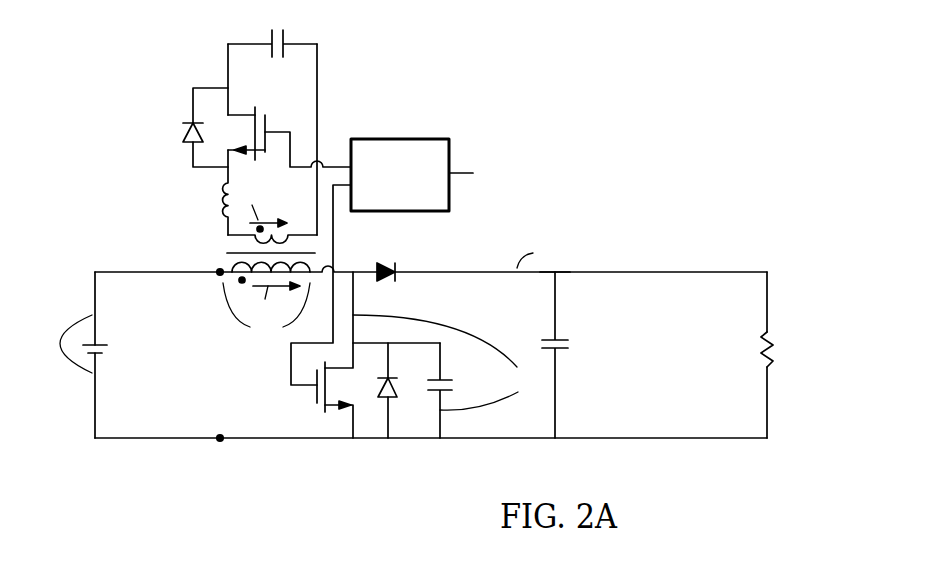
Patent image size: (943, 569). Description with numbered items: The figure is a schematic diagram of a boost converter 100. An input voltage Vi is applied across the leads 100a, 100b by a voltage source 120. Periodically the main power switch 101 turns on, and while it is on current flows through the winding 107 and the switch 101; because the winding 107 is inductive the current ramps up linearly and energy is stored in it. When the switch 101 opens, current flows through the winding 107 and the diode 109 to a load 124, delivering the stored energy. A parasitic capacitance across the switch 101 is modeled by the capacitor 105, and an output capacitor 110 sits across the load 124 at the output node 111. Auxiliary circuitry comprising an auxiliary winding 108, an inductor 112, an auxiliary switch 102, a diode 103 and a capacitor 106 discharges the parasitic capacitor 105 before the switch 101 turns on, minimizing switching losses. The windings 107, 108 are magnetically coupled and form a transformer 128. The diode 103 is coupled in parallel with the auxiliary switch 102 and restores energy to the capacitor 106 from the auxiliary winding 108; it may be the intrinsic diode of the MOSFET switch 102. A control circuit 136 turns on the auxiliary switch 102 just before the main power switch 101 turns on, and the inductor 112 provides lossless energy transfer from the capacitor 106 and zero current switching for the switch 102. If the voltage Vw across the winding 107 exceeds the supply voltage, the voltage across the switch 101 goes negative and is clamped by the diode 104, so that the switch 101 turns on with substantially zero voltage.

The boost converter 100 is at (553, 143).
The lead 100a is at (213, 278).
The lead 100b is at (215, 447).
The main power switch 101 is at (335, 420).
The auxiliary switch 102 is at (268, 117).
The diode 103 is at (182, 130).
The diode 104 is at (400, 400).
The capacitor 105 is at (453, 384).
The capacitor 106 is at (287, 33).
The winding 107 is at (310, 264).
The auxiliary winding 108 is at (283, 238).
The diode 109 is at (390, 262).
The output capacitor 110 is at (570, 347).
The output terminal 111 is at (558, 267).
The inductor 112 is at (220, 203).
The voltage source 120 is at (108, 350).
The load 124 is at (772, 343).
The transformer 128 is at (237, 250).
The control circuit 136 is at (430, 141).